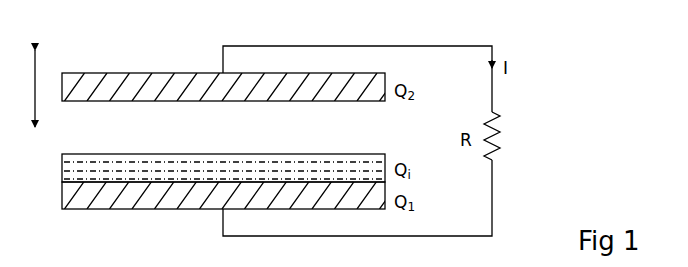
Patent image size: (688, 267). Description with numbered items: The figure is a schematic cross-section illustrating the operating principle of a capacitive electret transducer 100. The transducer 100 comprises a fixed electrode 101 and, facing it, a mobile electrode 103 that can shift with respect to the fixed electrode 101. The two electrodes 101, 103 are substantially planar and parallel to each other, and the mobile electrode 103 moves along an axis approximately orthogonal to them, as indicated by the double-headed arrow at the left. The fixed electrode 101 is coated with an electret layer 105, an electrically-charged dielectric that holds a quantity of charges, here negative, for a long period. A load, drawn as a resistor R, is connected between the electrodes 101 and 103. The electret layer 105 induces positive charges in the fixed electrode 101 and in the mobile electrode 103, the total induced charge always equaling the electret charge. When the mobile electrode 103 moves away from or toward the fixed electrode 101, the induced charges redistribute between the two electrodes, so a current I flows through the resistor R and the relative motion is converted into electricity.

The capacitive electret transducer 100 is at (86, 52).
The fixed electrode 101 is at (145, 203).
The mobile electrode 103 is at (107, 73).
The electret layer 105 is at (148, 163).